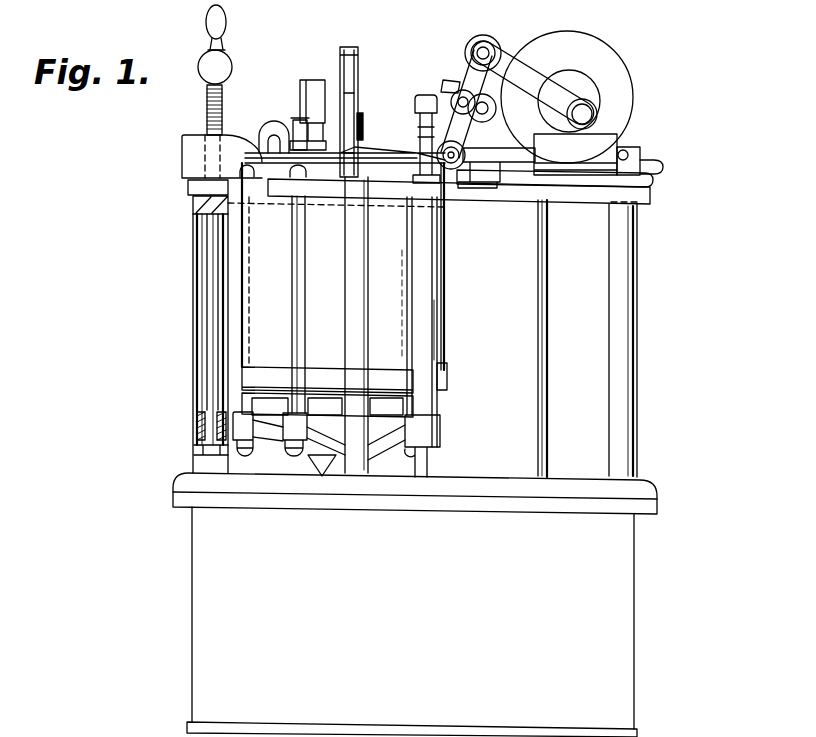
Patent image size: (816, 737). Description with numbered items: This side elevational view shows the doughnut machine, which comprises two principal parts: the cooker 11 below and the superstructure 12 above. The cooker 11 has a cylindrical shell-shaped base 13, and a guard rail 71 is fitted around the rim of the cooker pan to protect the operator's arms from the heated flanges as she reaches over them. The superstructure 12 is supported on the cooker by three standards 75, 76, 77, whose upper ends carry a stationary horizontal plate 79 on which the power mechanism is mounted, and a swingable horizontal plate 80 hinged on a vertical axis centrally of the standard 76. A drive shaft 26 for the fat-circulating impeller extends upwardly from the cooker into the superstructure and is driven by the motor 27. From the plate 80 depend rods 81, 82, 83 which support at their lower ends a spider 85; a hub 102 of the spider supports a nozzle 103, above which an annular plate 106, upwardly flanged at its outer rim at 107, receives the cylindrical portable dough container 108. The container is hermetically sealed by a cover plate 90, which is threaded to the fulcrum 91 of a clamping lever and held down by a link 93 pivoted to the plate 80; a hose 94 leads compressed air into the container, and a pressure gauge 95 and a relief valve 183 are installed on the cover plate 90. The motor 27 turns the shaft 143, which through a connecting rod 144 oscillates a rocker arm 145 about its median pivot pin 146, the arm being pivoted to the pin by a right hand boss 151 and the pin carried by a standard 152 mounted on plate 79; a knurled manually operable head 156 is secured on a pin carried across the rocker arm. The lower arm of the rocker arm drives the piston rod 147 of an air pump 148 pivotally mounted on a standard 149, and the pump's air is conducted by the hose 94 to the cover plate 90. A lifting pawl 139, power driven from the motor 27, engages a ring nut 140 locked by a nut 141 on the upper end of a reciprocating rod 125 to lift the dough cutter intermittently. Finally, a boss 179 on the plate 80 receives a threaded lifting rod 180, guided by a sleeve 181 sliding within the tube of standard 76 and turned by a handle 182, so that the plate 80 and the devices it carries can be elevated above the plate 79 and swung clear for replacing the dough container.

The cooker 11 is at (663, 641).
The superstructure 12 is at (684, 300).
The cylindrical shell-shaped base 13 is at (192, 616).
The drive shaft 26 is at (548, 350).
The motor 27 is at (634, 106).
The guard rail 71 is at (660, 498).
The standard 75 is at (622, 430).
The standard 76 is at (193, 348).
The standard 77 is at (372, 326).
The stationary horizontal plate 79 is at (184, 190).
The swingable horizontal plate 80 is at (212, 214).
The rod 81 is at (408, 270).
The rod 82 is at (305, 336).
The rod 83 is at (252, 325).
The spider 85 is at (428, 462).
The cover plate 90 is at (372, 156).
The fulcrum 91 is at (359, 56).
The link 93 is at (358, 100).
The hose 94 is at (264, 128).
The pressure gauge 95 is at (314, 80).
The hub 102 is at (345, 300).
The nozzle 103 is at (318, 468).
The annular plate 106 is at (262, 387).
The upward flange 107 is at (447, 392).
The dough container 108 is at (403, 352).
The reciprocating rod 125 is at (436, 328).
The lifting pawl 139 is at (450, 87).
The ring nut 140 is at (415, 108).
The nut 141 is at (452, 96).
The shaft 143 is at (578, 90).
The connecting rod 144 is at (541, 76).
The rocker arm 145 is at (482, 36).
The median pivot pin 146 is at (496, 108).
The piston rod 147 is at (520, 176).
The air pump 148 is at (600, 150).
The standard 149 is at (636, 160).
The right hand boss 151 is at (463, 128).
The standard 152 is at (484, 184).
The knurled manually operable head 156 is at (508, 58).
The boss 179 is at (184, 160).
The lifting rod 180 is at (210, 112).
The sleeve 181 is at (196, 430).
The handle 182 is at (228, 30).
The relief valve 183 is at (293, 118).